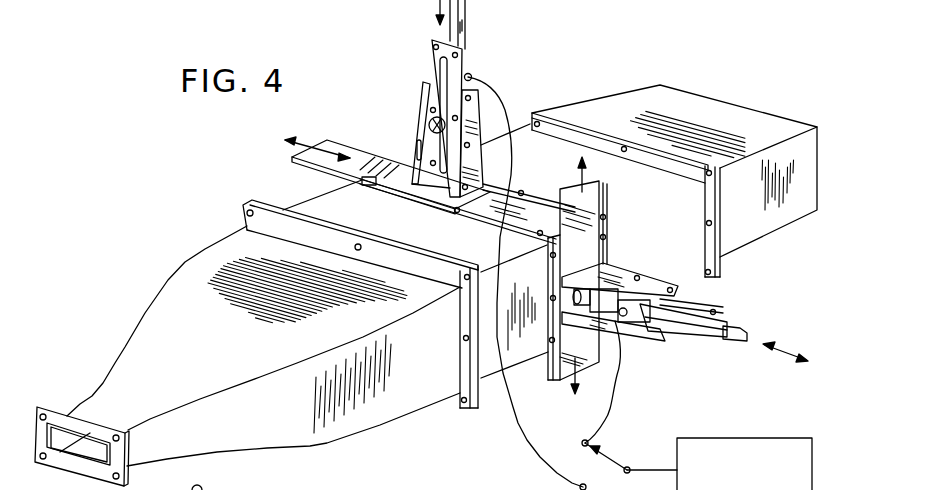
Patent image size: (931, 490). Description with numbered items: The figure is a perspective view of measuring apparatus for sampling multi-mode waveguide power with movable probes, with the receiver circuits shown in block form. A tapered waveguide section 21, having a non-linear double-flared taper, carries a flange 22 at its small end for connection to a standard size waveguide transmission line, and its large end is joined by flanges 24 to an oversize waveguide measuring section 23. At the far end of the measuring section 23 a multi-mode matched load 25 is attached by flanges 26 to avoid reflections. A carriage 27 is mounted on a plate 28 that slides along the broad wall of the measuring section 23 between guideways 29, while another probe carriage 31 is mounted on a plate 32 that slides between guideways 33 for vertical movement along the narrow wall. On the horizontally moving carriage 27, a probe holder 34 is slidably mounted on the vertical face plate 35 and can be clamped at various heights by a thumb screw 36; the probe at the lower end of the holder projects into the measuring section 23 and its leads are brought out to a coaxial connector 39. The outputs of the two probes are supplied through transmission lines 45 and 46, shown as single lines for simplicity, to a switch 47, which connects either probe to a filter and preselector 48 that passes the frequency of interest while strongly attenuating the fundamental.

The tapered waveguide section 21 is at (178, 293).
The flange 22 is at (67, 417).
The oversize waveguide measuring section 23 is at (323, 208).
The flanges 24 is at (252, 200).
The multi-mode matched load 25 is at (630, 103).
The flanges 26 is at (533, 113).
The carriage 27 is at (418, 110).
The plate 28 is at (342, 147).
The guideways 29 is at (400, 198).
The probe carriage 31 is at (650, 283).
The plate 32 is at (592, 202).
The guideways 33 is at (557, 267).
The probe holder 34 is at (462, 13).
The vertical face plate 35 is at (435, 62).
The thumb screw 36 is at (427, 128).
The coaxial connector 39 is at (468, 73).
The transmission line 45 is at (520, 435).
The transmission line 46 is at (618, 403).
The switch 47 is at (615, 460).
The filter and preselector 48 is at (785, 420).